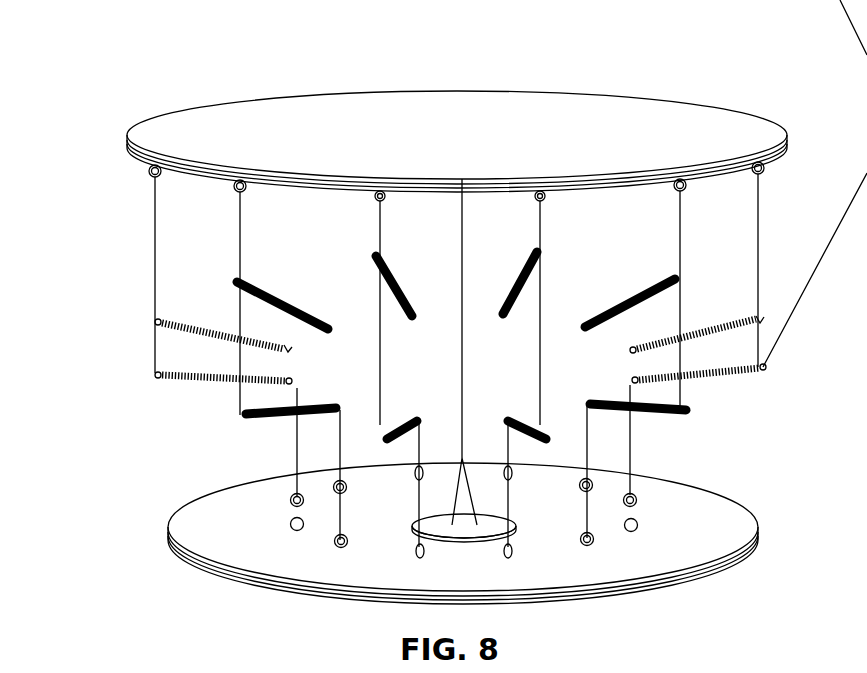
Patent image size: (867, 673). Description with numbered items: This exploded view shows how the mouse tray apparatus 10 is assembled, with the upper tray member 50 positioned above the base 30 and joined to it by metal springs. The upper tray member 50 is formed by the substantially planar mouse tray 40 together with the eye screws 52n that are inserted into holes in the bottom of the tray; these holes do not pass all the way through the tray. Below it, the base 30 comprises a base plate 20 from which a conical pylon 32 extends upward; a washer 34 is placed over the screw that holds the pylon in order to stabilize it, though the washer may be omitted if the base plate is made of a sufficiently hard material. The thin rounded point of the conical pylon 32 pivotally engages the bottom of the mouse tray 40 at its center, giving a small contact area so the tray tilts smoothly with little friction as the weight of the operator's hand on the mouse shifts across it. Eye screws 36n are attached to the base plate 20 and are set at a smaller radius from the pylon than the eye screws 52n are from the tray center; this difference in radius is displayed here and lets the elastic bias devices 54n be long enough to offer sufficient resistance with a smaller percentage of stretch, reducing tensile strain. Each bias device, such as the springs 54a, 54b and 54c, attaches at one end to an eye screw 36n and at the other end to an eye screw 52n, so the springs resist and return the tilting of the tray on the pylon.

The mouse tray apparatus 10 is at (212, 67).
The upper tray member 50 is at (665, 93).
The mouse tray 40 is at (457, 135).
The eye screws 52n is at (145, 166).
The bias device 54a is at (233, 280).
The bias device 54b is at (158, 322).
The bias device 54c is at (158, 375).
The bias devices 54n is at (243, 415).
The conical pylon 32 is at (466, 490).
The base plate 20 is at (530, 574).
The washer 34 is at (485, 523).
The base 30 is at (752, 550).
The eye screws 36n is at (330, 542).